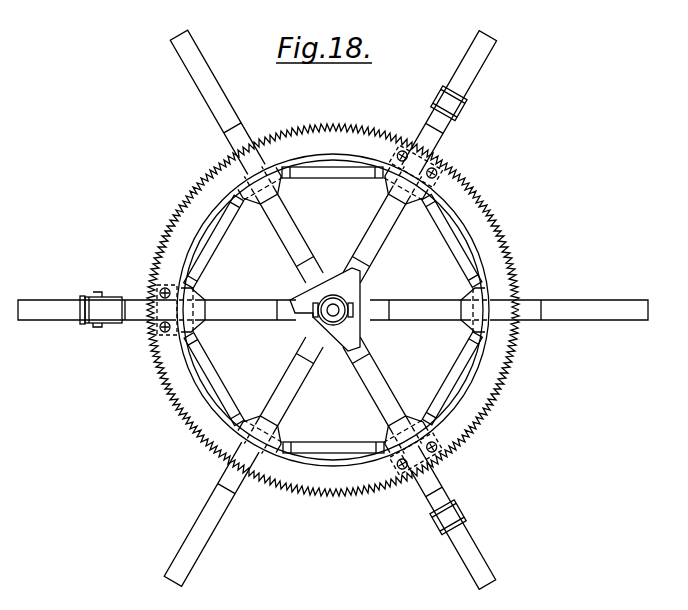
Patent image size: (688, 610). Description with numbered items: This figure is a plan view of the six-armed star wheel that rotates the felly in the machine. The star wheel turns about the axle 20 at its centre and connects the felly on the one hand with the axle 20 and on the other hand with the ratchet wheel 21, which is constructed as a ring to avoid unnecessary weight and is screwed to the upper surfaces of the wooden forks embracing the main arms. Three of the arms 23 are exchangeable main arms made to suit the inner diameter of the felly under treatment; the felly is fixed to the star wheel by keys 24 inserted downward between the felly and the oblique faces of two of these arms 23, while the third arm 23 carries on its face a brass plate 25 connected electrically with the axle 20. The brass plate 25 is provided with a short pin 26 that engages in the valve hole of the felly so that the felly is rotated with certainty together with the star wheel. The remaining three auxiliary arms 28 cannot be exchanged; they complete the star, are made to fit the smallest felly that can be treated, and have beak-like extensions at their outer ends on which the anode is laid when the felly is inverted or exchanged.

The axle 20 is at (336, 308).
The ratchet wheel 21 is at (480, 411).
The arms 23 is at (480, 72).
The keys 24 is at (452, 108).
The brass plate 25 is at (90, 324).
The pin 26 is at (83, 298).
The auxiliary arms 28 is at (212, 88).